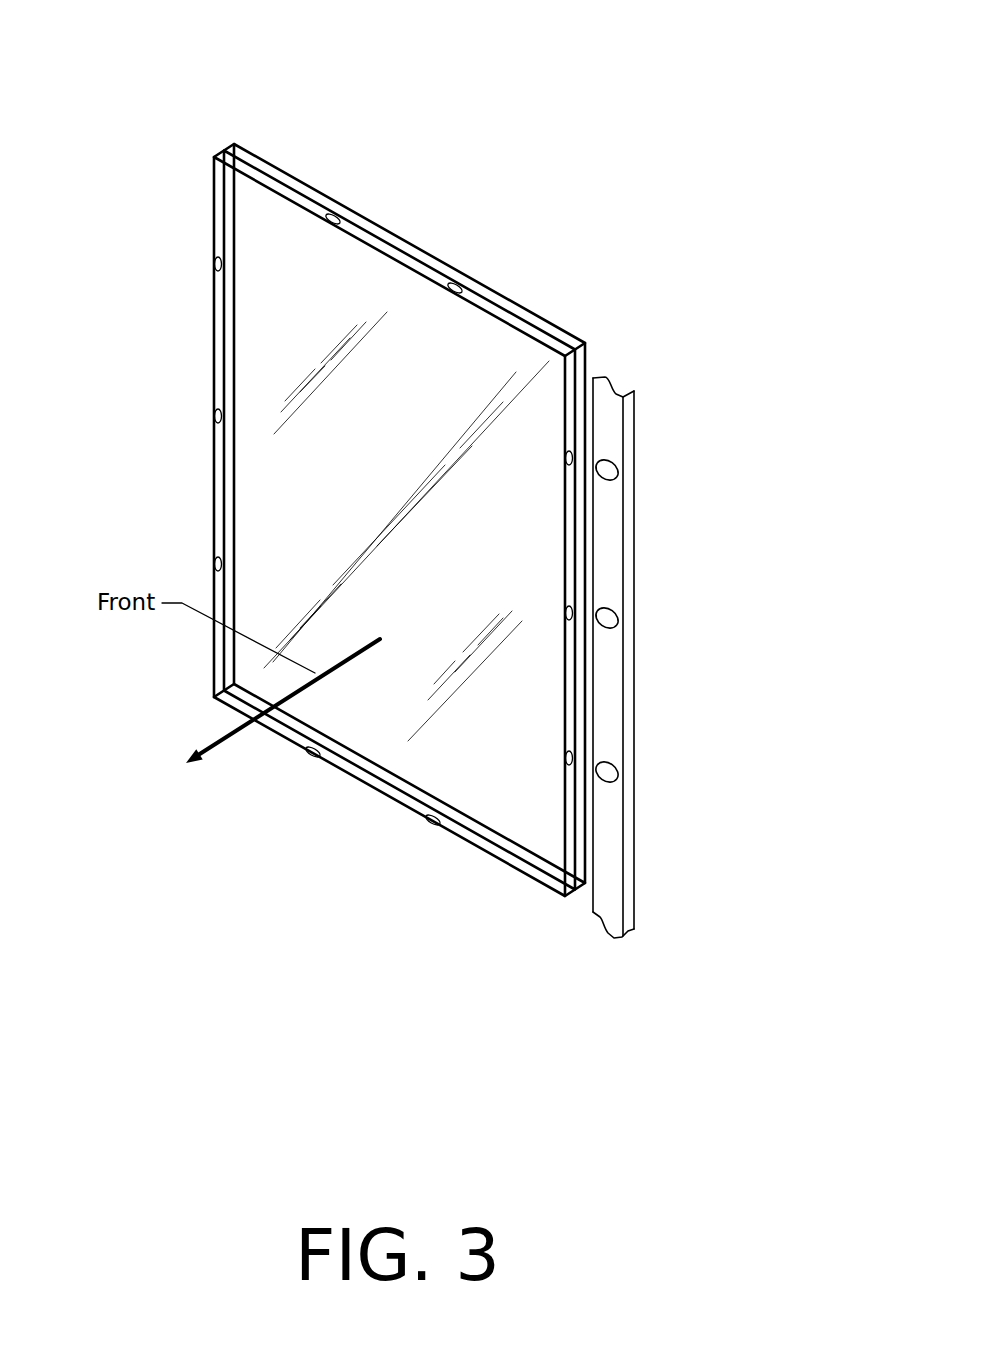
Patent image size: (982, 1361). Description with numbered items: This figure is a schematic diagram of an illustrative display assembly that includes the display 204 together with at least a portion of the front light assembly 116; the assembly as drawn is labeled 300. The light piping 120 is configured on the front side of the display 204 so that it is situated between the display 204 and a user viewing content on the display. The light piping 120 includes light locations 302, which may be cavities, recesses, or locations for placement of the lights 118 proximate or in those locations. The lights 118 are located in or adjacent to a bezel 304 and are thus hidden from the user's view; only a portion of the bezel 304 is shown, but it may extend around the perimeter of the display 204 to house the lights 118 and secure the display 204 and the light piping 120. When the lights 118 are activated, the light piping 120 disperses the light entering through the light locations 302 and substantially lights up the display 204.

The front light assembly 116 is at (160, 65).
The lights 118 is at (614, 479).
The light piping 120 is at (418, 264).
The display 204 is at (443, 267).
The display assembly 300 is at (670, 140).
The light locations 302 is at (218, 258).
The bezel 304 is at (632, 392).